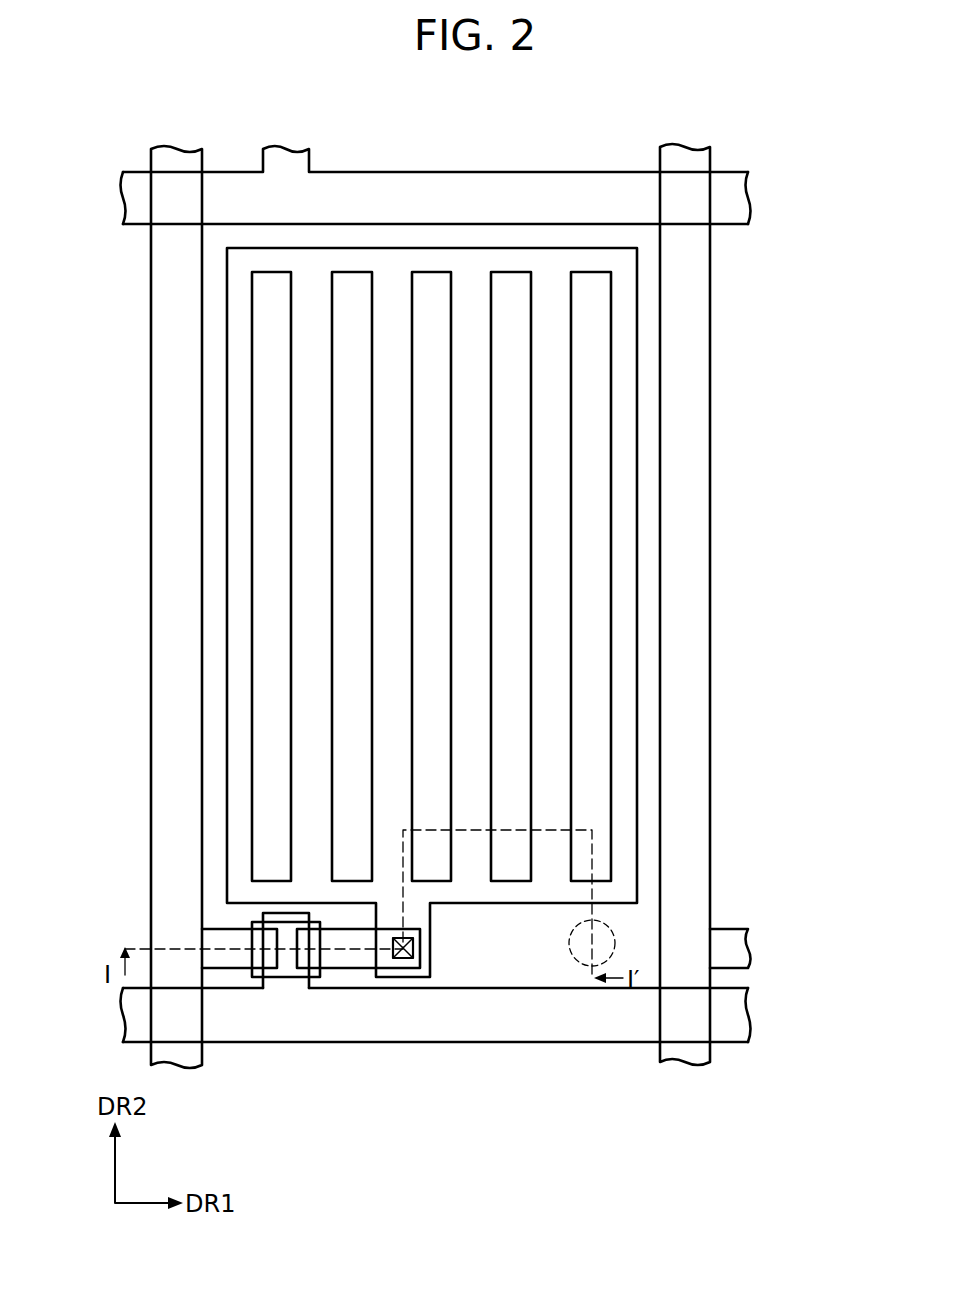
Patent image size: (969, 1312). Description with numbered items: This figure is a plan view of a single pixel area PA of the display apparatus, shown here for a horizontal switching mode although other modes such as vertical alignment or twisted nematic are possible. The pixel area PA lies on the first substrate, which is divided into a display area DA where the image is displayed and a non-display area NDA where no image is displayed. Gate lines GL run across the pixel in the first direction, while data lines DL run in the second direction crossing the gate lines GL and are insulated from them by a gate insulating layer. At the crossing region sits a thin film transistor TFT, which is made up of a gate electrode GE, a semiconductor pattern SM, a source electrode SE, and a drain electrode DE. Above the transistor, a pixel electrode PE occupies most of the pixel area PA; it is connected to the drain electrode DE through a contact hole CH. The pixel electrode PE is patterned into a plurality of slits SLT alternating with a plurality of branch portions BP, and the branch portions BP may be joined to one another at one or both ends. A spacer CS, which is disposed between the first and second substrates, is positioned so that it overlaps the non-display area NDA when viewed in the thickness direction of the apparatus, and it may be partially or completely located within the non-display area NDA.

The pixel area PA is at (624, 141).
The display area DA is at (384, 259).
The non-display area NDA is at (218, 915).
The gate line GL is at (737, 198).
The data line DL is at (162, 604).
The pixel electrode PE is at (532, 612).
The slit SLT is at (593, 596).
The branch portion BP is at (623, 676).
The thin film transistor TFT is at (311, 1028).
The source electrode SE is at (233, 968).
The semiconductor pattern SM is at (277, 977).
The gate electrode GE is at (309, 988).
The drain electrode DE is at (348, 968).
The contact hole CH is at (403, 958).
The spacer CS is at (567, 950).